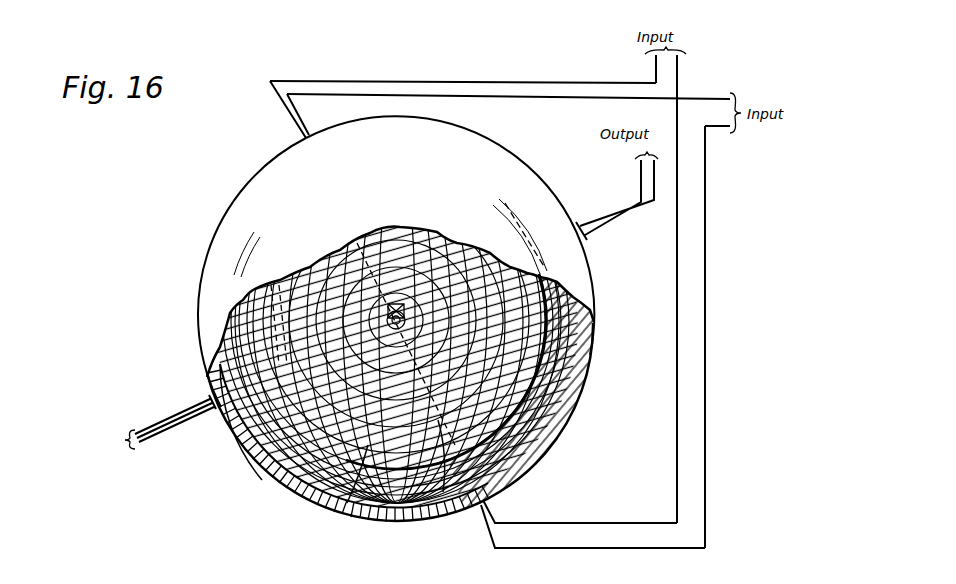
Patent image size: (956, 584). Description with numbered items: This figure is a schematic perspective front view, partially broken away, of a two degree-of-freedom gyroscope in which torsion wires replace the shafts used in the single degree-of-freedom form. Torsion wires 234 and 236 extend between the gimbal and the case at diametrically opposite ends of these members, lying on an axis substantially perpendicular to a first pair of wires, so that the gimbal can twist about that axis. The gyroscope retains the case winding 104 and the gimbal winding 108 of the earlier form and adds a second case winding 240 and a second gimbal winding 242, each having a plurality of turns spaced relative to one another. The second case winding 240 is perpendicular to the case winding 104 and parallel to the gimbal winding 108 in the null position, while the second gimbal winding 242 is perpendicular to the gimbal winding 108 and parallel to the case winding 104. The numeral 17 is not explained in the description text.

The conduit 17 is at (617, 238).
The case winding 104 is at (547, 412).
The gimbal winding 108 is at (512, 382).
The torsion wire 234 is at (252, 447).
The torsion wire 236 is at (562, 247).
The second case winding 240 is at (443, 487).
The second gimbal winding 242 is at (368, 447).